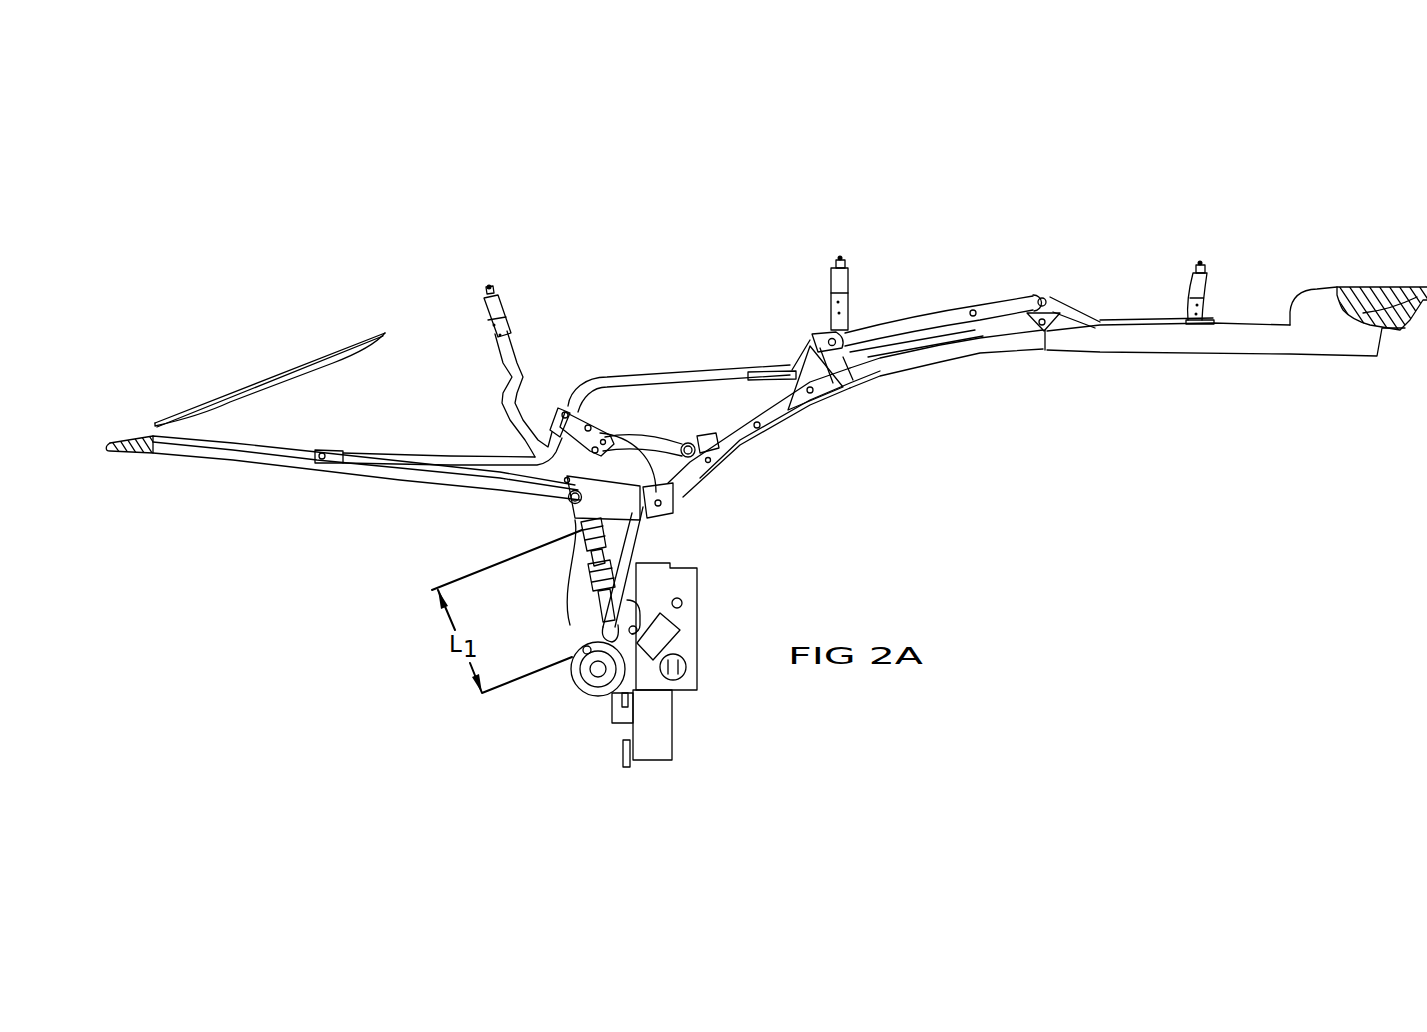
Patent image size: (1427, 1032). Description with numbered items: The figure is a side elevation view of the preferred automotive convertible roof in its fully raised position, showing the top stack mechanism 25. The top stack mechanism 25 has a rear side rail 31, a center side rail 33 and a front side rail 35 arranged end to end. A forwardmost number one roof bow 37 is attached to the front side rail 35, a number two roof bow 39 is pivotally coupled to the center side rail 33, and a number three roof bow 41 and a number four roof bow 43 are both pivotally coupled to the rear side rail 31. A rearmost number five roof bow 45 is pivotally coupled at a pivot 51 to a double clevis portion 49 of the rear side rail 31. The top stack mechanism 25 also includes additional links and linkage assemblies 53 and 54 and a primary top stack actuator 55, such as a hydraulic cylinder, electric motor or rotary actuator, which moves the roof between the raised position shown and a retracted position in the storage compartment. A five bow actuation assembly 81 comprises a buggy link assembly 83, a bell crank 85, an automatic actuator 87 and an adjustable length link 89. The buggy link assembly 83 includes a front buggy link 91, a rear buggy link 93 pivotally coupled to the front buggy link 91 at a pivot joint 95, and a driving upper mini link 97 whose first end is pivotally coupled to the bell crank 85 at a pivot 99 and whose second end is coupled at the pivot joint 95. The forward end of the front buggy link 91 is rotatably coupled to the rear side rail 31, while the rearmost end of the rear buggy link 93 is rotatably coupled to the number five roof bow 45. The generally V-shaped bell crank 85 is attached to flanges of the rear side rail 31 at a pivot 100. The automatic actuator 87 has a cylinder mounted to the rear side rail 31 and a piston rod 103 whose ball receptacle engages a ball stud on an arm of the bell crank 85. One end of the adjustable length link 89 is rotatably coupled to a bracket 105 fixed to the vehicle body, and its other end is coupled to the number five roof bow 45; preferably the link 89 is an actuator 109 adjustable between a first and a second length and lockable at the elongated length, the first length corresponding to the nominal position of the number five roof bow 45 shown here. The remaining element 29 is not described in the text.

The top stack mechanism 25 is at (772, 246).
The rear bow 29 is at (317, 360).
The rear side rail 31 is at (750, 432).
The center side rail 33 is at (945, 352).
The front side rail 35 is at (1182, 340).
The number one roof bow 37 is at (1390, 292).
The number two roof bow 39 is at (1200, 284).
The number three roof bow 41 is at (845, 280).
The number four roof bow 43 is at (496, 306).
The number five roof bow 45 is at (117, 450).
The double clevis portion 49 is at (580, 535).
The pivot 51 is at (578, 482).
The linkage assembly 53 is at (933, 318).
The linkage assembly 54 is at (1059, 280).
The primary top stack actuator 55 is at (668, 730).
The five bow actuation assembly 81 is at (605, 338).
The buggy link assembly 83 is at (544, 384).
The bell crank 85 is at (631, 447).
The automatic actuator 87 is at (716, 436).
The adjustable length link 89 is at (588, 577).
The front buggy link 91 is at (683, 380).
The rear buggy link 93 is at (479, 458).
The pivot joint 95 is at (565, 404).
The driving upper mini link 97 is at (628, 437).
The pivot 99 is at (633, 442).
The pivot 100 is at (683, 488).
The piston rod 103 is at (718, 443).
The bracket 105 is at (693, 635).
The actuator 109 is at (593, 617).